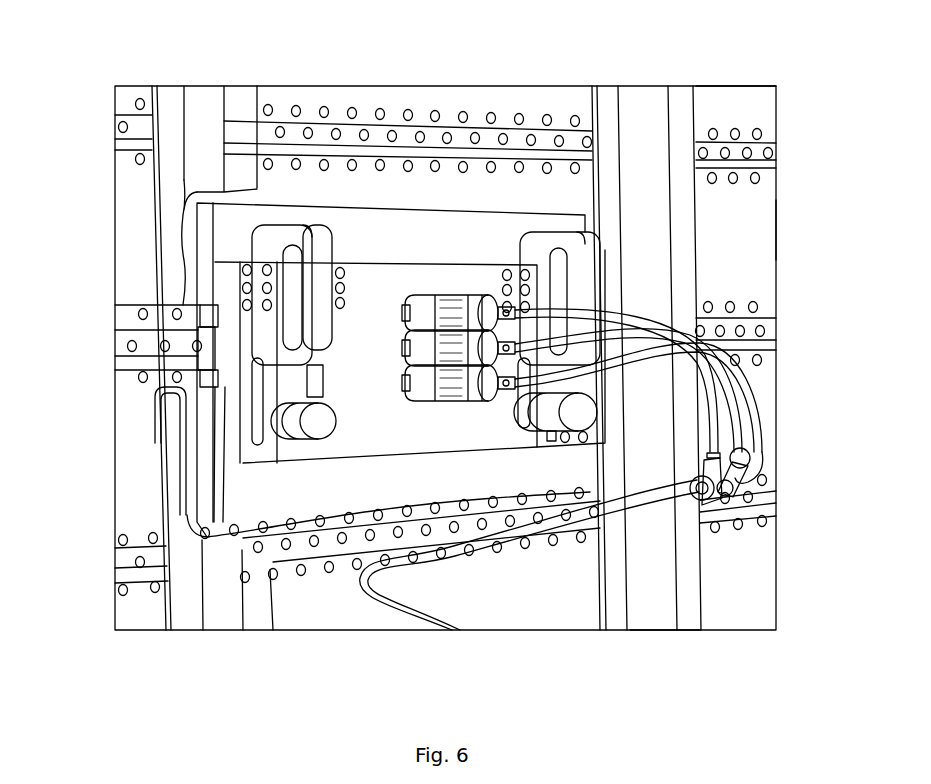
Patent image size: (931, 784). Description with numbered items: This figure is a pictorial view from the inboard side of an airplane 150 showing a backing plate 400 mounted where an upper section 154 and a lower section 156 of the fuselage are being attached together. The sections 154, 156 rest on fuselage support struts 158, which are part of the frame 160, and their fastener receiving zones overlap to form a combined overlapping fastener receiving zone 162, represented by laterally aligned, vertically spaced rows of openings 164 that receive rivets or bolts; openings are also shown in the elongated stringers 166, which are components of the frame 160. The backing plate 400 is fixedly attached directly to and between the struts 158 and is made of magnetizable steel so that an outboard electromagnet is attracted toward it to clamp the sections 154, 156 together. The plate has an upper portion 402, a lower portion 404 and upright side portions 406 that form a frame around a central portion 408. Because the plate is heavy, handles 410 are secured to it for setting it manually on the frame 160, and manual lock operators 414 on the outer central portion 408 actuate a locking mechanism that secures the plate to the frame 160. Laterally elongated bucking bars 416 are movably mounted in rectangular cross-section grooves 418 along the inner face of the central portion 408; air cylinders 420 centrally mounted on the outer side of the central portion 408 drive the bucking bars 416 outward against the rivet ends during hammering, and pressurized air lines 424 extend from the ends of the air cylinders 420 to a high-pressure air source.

The airplane 150 is at (647, 86).
The upper section 154 is at (740, 96).
The lower section 156 is at (765, 236).
The fuselage support struts 158 is at (206, 86).
The frame 160 is at (667, 632).
The combined overlapping fastener receiving zone 162 is at (760, 150).
The openings 164 is at (330, 106).
The stringers 166 is at (118, 126).
The backing plate 400 is at (406, 412).
The upper portion 402 is at (503, 217).
The lower portion 404 is at (513, 490).
The upright side portions 406 is at (220, 283).
The central portion 408 is at (392, 327).
The handles 410 is at (520, 243).
The manual lock operators 414 is at (338, 424).
The bucking bars 416 is at (196, 308).
The grooves 418 is at (218, 322).
The air cylinders 420 is at (412, 296).
The pressurized air lines 424 is at (763, 430).